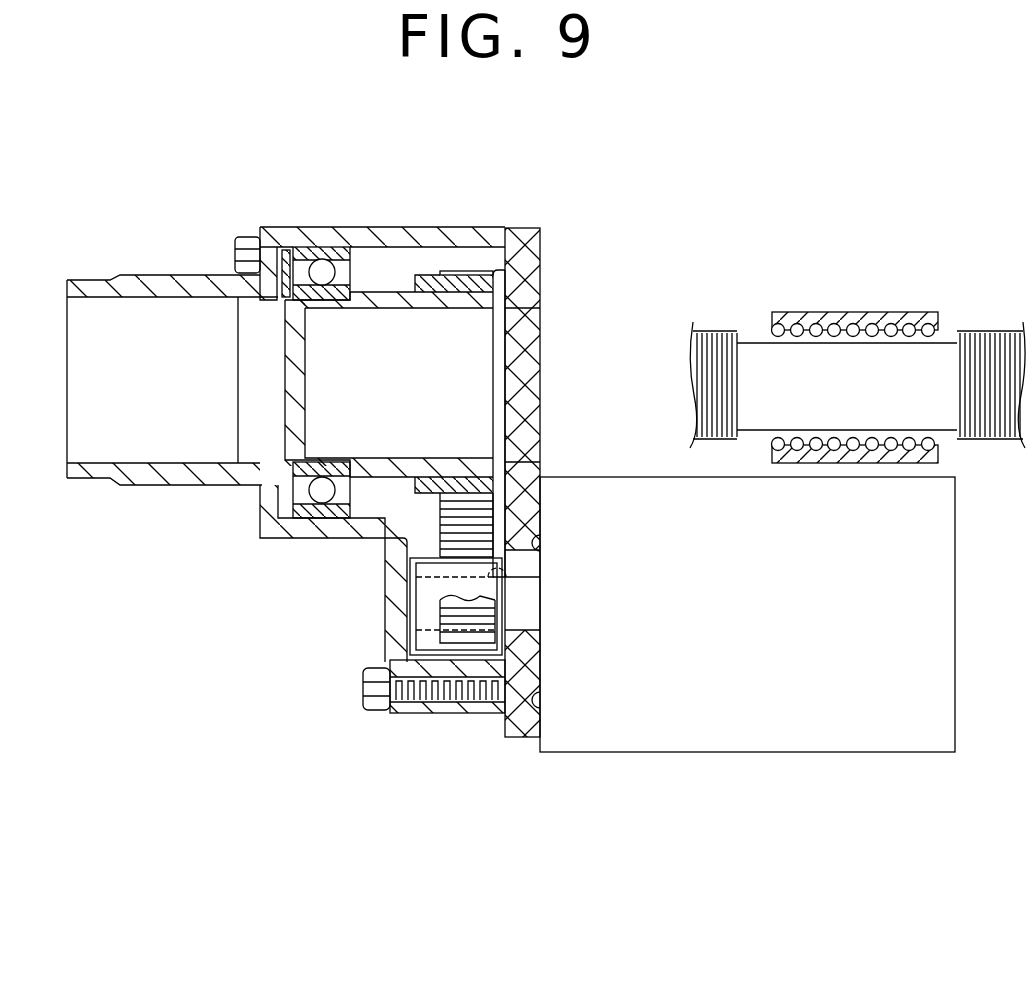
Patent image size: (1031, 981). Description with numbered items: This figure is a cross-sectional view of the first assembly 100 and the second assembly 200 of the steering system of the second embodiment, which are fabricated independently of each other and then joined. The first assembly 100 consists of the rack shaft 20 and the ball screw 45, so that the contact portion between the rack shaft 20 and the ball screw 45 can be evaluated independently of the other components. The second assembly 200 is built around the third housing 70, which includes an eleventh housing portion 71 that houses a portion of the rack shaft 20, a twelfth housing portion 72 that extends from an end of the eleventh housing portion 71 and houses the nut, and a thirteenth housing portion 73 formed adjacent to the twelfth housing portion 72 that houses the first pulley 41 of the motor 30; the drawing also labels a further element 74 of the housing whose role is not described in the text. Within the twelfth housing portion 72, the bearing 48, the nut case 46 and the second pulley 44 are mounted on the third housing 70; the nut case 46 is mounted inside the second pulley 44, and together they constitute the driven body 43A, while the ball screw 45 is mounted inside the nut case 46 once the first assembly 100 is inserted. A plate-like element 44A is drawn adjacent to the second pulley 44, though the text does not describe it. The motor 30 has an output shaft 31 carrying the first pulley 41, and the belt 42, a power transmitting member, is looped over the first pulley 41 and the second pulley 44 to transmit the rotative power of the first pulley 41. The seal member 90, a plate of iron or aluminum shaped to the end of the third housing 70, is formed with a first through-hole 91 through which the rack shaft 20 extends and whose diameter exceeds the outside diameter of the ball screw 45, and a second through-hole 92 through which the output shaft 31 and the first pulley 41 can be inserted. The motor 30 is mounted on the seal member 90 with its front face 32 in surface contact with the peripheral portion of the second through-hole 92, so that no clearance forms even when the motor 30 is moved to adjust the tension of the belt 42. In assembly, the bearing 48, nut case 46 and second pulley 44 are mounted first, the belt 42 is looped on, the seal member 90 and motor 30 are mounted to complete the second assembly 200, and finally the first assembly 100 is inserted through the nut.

The second assembly 200 is at (511, 466).
The first assembly 100 is at (857, 302).
The rack shaft 20 is at (988, 331).
The ball screw 45 is at (862, 312).
The third housing 70 is at (237, 444).
The eleventh housing portion 71 is at (139, 486).
The twelfth housing portion 72 is at (300, 539).
The thirteenth housing portion 73 is at (440, 714).
The gear 74 is at (483, 714).
The bearing 48 is at (300, 227).
The driven body 43A is at (445, 320).
The nut case 46 is at (409, 287).
The second pulley 44 is at (462, 271).
The rotor plate 44A is at (481, 272).
The seal member 90 is at (544, 449).
The first through-hole 91 is at (525, 313).
The second through-hole 92 is at (527, 553).
The motor 30 is at (748, 752).
The output shaft 31 is at (500, 573).
The front face 32 is at (535, 702).
The first pulley 41 is at (417, 565).
The belt 42 is at (443, 638).